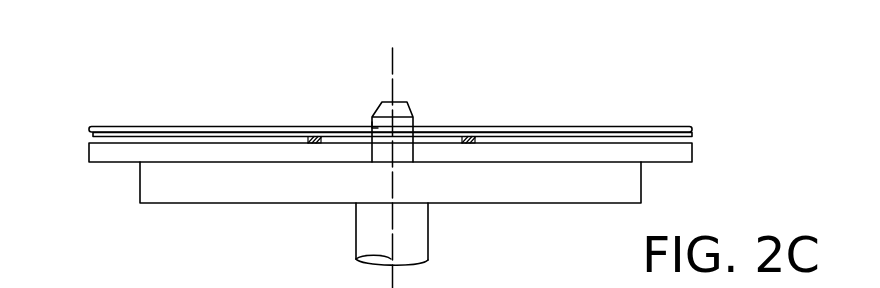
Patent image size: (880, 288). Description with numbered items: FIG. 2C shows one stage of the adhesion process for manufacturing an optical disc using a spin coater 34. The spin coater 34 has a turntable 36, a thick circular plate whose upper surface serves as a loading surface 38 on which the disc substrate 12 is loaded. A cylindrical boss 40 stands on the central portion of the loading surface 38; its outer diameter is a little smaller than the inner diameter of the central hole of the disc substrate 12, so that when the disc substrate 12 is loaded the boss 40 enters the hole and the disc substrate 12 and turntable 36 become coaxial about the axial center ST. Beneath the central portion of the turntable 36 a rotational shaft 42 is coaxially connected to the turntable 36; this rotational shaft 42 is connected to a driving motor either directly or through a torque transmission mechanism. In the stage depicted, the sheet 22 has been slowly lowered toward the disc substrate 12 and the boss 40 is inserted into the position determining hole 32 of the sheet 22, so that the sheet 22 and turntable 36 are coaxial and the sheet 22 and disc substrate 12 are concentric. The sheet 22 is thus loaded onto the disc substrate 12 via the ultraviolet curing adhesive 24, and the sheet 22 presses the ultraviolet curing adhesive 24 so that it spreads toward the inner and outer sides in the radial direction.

The disc substrate 12 is at (692, 150).
The sheet 22 is at (90, 129).
The ultraviolet curing adhesive 24 is at (310, 137).
The position determining hole 32 is at (372, 122).
The spin coater 34 is at (661, 94).
The turntable 36 is at (641, 182).
The loading surface 38 is at (207, 163).
The boss 40 is at (413, 117).
The rotational shaft 42 is at (365, 235).
The axial center ST is at (393, 65).